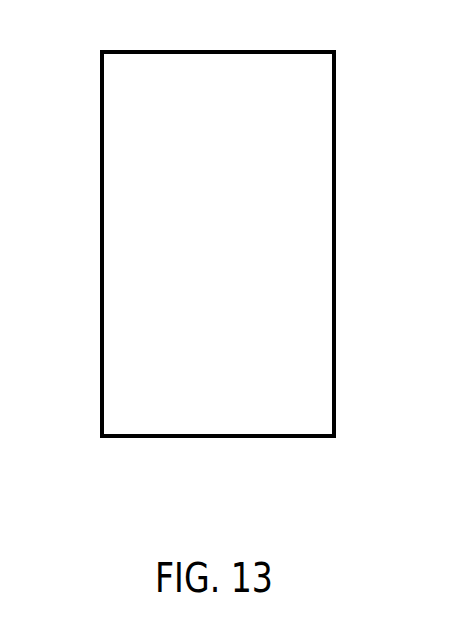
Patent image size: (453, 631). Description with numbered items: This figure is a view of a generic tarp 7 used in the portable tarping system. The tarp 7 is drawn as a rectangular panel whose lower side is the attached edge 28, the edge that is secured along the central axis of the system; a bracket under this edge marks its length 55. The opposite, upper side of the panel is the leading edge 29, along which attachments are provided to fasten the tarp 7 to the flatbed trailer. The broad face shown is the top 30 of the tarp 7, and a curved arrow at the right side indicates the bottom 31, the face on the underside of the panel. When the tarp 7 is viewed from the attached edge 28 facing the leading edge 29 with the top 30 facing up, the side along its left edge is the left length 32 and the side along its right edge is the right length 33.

The tarp 7 is at (218, 244).
The attached edge 28 is at (218, 466).
The leading edge 29 is at (220, 50).
The top 30 is at (218, 244).
The bottom 31 is at (339, 153).
The left length 32 is at (100, 178).
The right length 33 is at (337, 259).
The length 55 is at (217, 452).